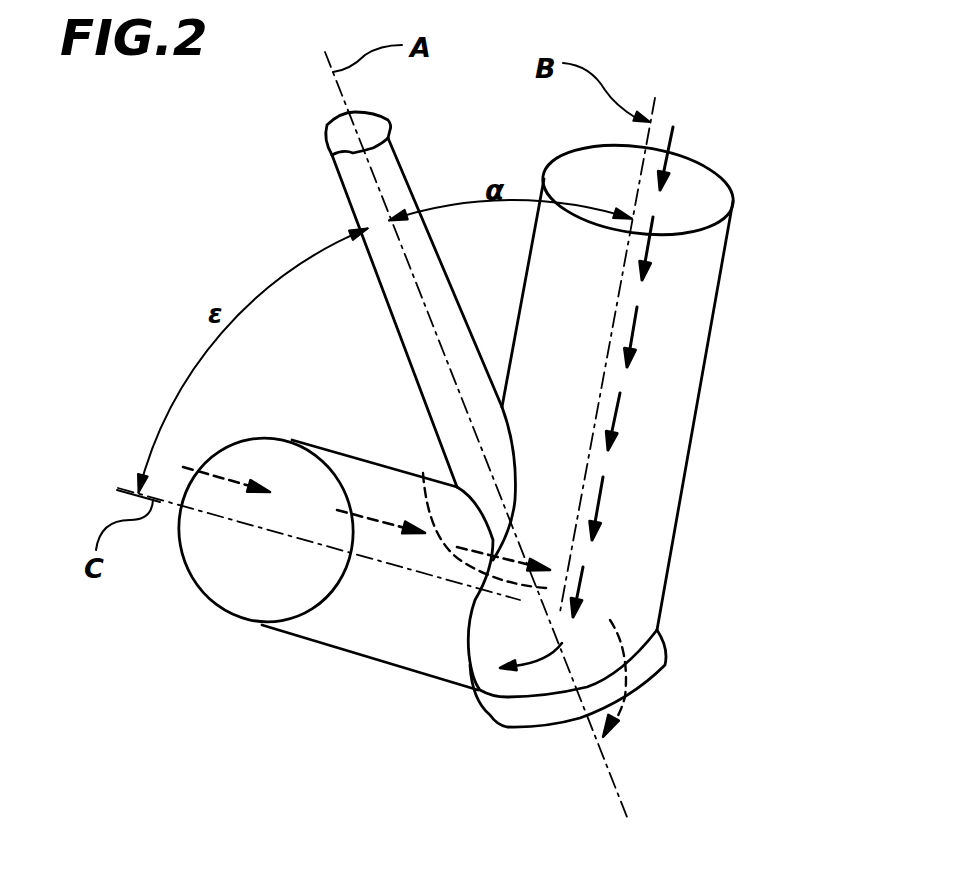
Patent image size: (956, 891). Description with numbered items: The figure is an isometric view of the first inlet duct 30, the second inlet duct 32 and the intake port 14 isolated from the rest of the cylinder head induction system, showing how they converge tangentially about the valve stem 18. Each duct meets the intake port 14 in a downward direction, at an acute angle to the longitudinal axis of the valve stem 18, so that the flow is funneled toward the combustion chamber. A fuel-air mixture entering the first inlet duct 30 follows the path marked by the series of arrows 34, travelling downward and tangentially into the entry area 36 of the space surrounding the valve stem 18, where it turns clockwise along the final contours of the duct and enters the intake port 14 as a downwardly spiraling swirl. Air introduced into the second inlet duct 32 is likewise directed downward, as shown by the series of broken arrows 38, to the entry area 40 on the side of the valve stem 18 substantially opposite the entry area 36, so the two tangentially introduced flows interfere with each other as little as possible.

The intake port 14 is at (658, 636).
The valve stem 18 is at (405, 165).
The first inlet duct 30 is at (712, 320).
The second inlet duct 32 is at (327, 646).
The series of arrows 34 is at (620, 406).
The entry area 36 is at (553, 677).
The series of broken arrows 38 is at (228, 482).
The entry area 40 is at (424, 474).